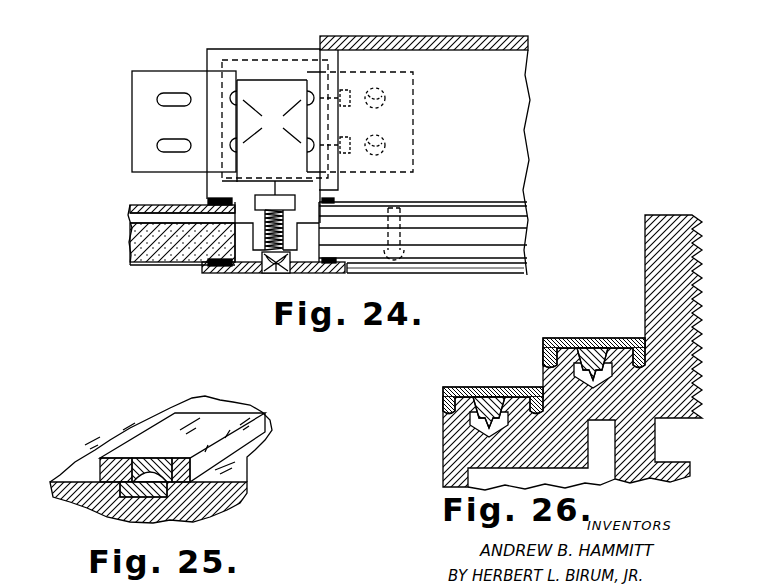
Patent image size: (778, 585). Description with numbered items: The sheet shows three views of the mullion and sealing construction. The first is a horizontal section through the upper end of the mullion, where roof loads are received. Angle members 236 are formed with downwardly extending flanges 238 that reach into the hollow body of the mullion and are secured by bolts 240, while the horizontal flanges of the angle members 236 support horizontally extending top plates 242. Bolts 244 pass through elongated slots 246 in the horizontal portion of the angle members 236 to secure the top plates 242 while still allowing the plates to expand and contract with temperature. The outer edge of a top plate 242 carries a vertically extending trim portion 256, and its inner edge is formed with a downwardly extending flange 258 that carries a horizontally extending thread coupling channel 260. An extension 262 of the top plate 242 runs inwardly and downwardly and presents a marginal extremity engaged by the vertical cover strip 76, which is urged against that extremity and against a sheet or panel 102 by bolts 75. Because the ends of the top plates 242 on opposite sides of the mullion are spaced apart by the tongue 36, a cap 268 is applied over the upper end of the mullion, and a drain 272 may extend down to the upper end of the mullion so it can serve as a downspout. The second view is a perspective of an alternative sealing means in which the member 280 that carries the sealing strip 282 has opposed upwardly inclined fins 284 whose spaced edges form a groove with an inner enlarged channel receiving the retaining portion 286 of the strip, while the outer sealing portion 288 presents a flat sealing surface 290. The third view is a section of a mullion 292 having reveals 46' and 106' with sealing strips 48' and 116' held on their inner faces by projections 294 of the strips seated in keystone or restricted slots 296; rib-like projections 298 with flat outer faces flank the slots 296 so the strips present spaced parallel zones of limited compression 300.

In FIG. 24, the trim portion 256 is at (437, 36).
In FIG. 24, the top plate 242 is at (497, 78).
In FIG. 24, the downwardly extending flange 238 is at (309, 81).
In FIG. 24, the angle member 236 is at (133, 163).
In FIG. 24, the elongated slot 246 is at (181, 102).
In FIG. 24, the bolt 240 is at (275, 127).
In FIG. 24, the bolt 244 is at (366, 122).
In FIG. 24, the downwardly extending flange 258 is at (143, 205).
In FIG. 24, the thread coupling channel 260 is at (142, 220).
In FIG. 24, the sheet or panel 102 is at (145, 246).
In FIG. 24, the extension 262 is at (206, 200).
In FIG. 24, the tongue 36 is at (247, 230).
In FIG. 24, the bolt 75 is at (275, 204).
In FIG. 24, the vertical cover strip 76 is at (330, 273).
In FIG. 24, the cap 268 is at (433, 270).
In FIG. 24, the drain 272 is at (400, 237).
In FIG. 25, the member 280 is at (253, 457).
In FIG. 25, the outer sealing portion 288 is at (78, 461).
In FIG. 25, the sealing strip 282 is at (234, 401).
In FIG. 25, the flat sealing surface 290 is at (163, 432).
In FIG. 25, the fin 284 is at (135, 460).
In FIG. 25, the retaining portion 286 is at (152, 498).
In FIG. 26, the mullion 292 is at (645, 472).
In FIG. 26, the zone of limited compression 300 is at (470, 378).
In FIG. 26, the projection 298 is at (538, 391).
In FIG. 26, the projection 294 is at (478, 433).
In FIG. 26, the keystone or restricted slot 296 is at (482, 429).
In FIG. 26, the reveal 106' is at (609, 304).
In FIG. 26, the sealing strip 116' is at (558, 319).
In FIG. 26, the reveal 46' is at (497, 342).
In FIG. 26, the sealing strip 48' is at (426, 386).